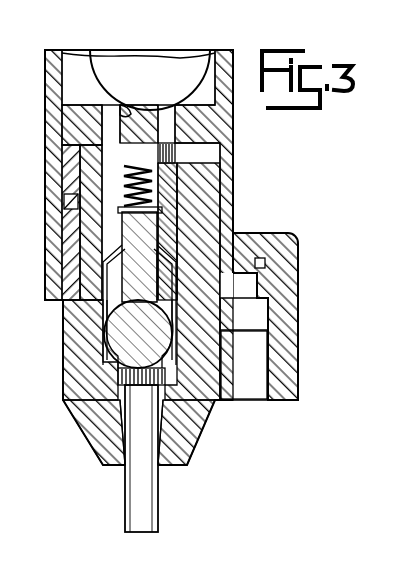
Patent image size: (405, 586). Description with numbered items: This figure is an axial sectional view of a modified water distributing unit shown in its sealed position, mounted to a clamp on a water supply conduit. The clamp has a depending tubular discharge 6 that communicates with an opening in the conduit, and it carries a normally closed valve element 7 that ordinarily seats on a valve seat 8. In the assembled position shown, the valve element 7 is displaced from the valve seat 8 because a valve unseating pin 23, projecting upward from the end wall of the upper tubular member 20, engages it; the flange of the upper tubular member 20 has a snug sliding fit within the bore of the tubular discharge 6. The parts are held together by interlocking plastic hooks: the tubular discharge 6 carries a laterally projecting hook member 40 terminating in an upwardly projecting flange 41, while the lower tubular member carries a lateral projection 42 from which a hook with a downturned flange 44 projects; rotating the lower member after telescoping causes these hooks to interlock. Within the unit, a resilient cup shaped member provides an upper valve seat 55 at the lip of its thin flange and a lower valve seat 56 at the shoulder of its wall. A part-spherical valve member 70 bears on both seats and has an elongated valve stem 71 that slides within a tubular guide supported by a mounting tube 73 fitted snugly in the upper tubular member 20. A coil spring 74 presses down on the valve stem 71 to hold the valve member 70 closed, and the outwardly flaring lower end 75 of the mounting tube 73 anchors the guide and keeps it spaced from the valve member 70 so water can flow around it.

The tubular discharge 6 is at (232, 105).
The valve element 7 is at (175, 67).
The valve seat 8 is at (83, 113).
The upper tubular member 20 is at (100, 262).
The valve unseating pin 23 is at (125, 108).
The hook member 40 is at (244, 356).
The upwardly projecting flange 41 is at (266, 261).
The lateral projection 42 is at (259, 330).
The downturned flange 44 is at (250, 271).
The upper valve seat 55 is at (114, 305).
The lower valve seat 56 is at (165, 305).
The valve member 70 is at (150, 350).
The valve stem 71 is at (160, 300).
The mounting tube 73 is at (158, 222).
The coil spring 74 is at (124, 176).
The lower end of mounting tube 75 is at (85, 325).